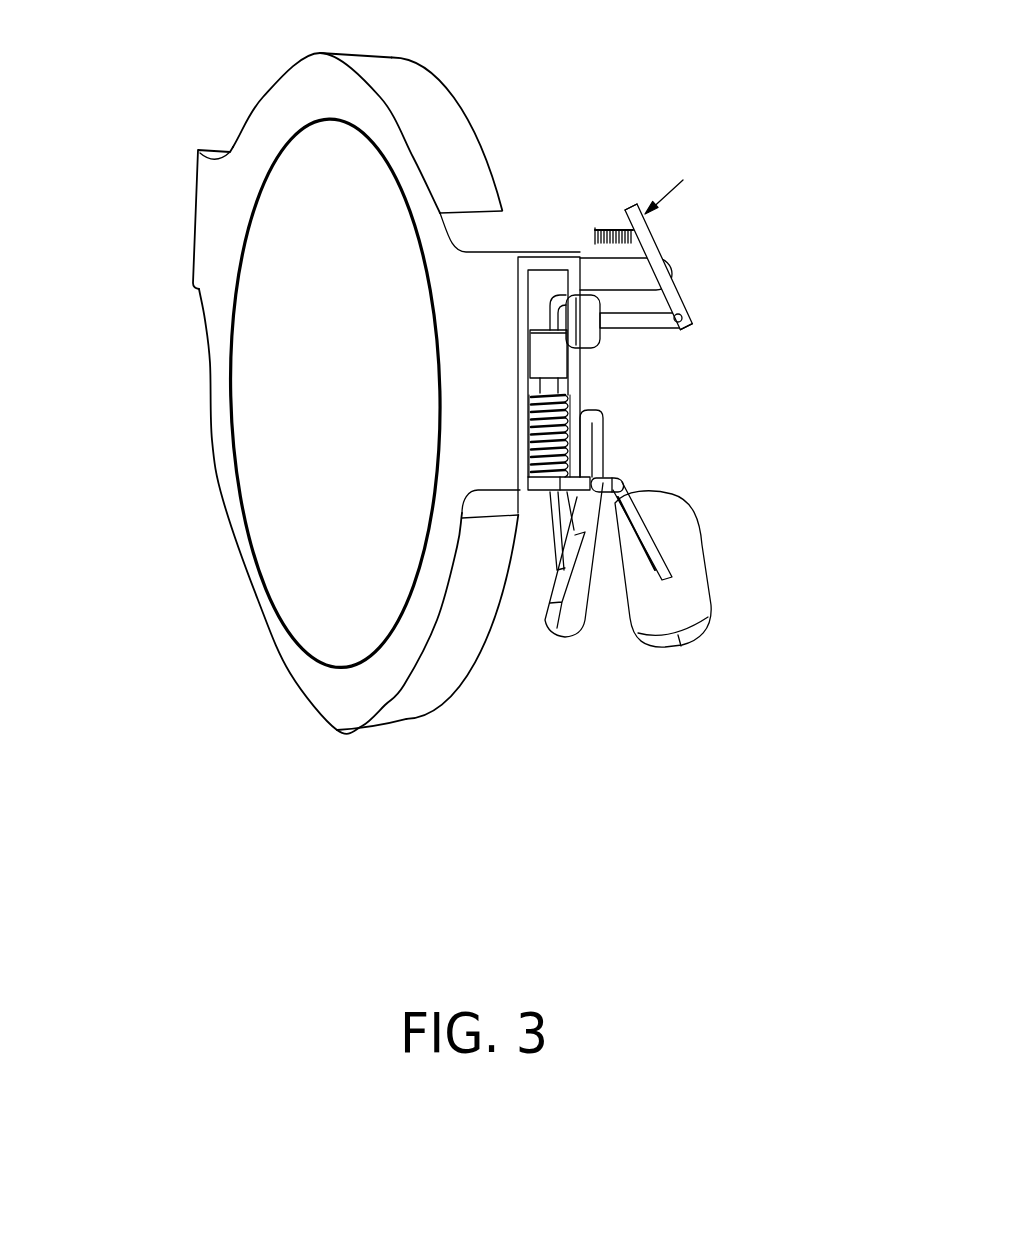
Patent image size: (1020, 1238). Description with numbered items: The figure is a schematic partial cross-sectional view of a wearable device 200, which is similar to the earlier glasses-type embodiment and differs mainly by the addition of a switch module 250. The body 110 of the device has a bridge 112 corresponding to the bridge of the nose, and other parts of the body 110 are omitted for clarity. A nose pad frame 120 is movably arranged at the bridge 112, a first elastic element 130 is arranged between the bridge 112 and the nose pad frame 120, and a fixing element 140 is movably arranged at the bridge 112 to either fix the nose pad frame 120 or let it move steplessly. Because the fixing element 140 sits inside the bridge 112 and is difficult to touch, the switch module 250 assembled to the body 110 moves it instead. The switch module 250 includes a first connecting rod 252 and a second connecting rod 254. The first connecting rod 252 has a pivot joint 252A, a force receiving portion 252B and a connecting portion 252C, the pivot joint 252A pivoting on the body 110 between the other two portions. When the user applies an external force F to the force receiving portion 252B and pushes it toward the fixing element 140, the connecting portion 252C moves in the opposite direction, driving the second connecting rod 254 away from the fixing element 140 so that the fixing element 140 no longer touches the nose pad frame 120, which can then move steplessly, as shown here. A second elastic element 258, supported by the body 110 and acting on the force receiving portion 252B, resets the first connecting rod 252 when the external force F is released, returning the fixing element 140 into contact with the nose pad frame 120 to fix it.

The wearable device 200 is at (836, 845).
The body 110 is at (213, 217).
The bridge 112 is at (490, 278).
The nose pad frame 120 is at (652, 547).
The first elastic element 130 is at (567, 445).
The fixing element 140 is at (555, 296).
The switch module 250 is at (738, 254).
The first connecting rod 252 is at (652, 243).
The pivot joint 252A is at (672, 273).
The force receiving portion 252B is at (627, 205).
The connecting portion 252C is at (688, 330).
The second connecting rod 254 is at (635, 318).
The second elastic element 258 is at (608, 230).
The external force F is at (673, 181).